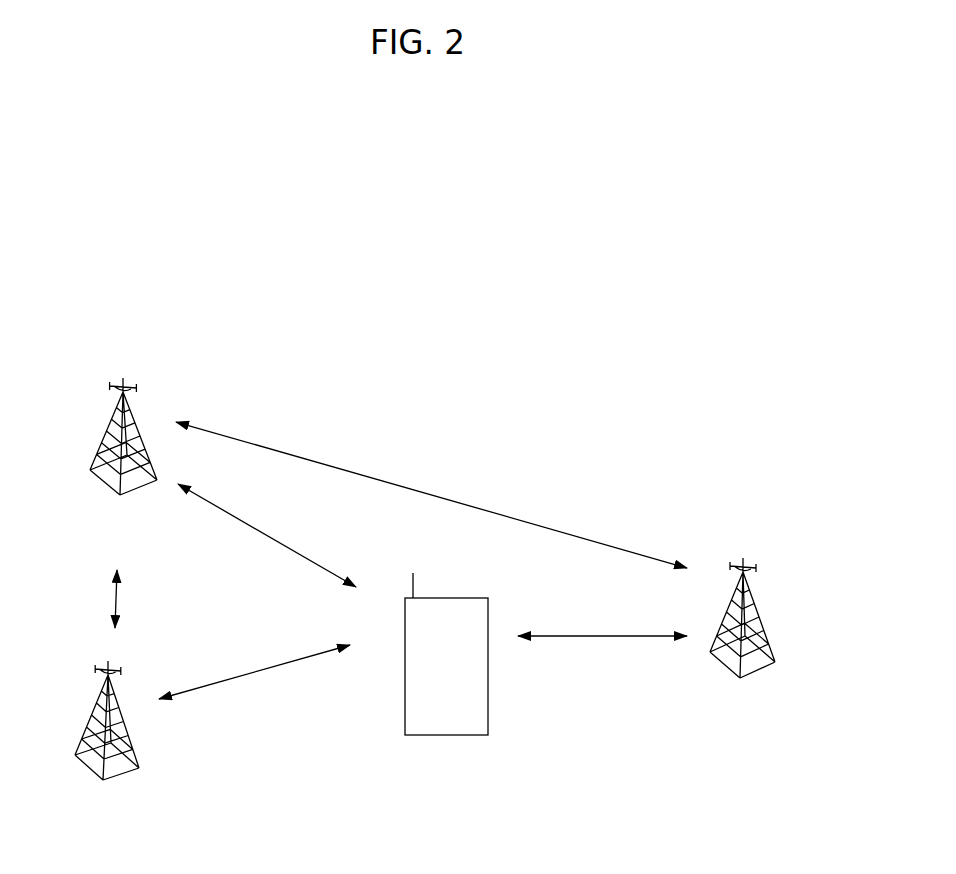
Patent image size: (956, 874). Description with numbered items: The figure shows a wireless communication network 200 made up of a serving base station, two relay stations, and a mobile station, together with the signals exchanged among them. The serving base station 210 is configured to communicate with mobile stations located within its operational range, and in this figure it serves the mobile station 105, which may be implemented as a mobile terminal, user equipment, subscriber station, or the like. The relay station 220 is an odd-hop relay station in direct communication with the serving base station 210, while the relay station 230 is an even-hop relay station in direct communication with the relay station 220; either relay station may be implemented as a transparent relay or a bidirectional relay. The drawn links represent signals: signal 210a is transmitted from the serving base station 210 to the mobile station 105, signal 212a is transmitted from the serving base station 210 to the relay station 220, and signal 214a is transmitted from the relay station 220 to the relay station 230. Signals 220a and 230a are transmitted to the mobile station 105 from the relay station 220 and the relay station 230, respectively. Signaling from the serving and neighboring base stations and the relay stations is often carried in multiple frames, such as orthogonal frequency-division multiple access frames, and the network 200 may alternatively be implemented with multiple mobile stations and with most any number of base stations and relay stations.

The wireless communication network 200 is at (604, 372).
The mobile station (MS) 105 is at (447, 738).
The serving base station (BS) 210 is at (757, 523).
The relay station (RS) 220 is at (143, 352).
The relay station (RS) 230 is at (158, 752).
The signal 210a is at (590, 640).
The signal 212a is at (443, 497).
The signal 214a is at (117, 600).
The signal 220a is at (275, 538).
The signal 230a is at (255, 677).